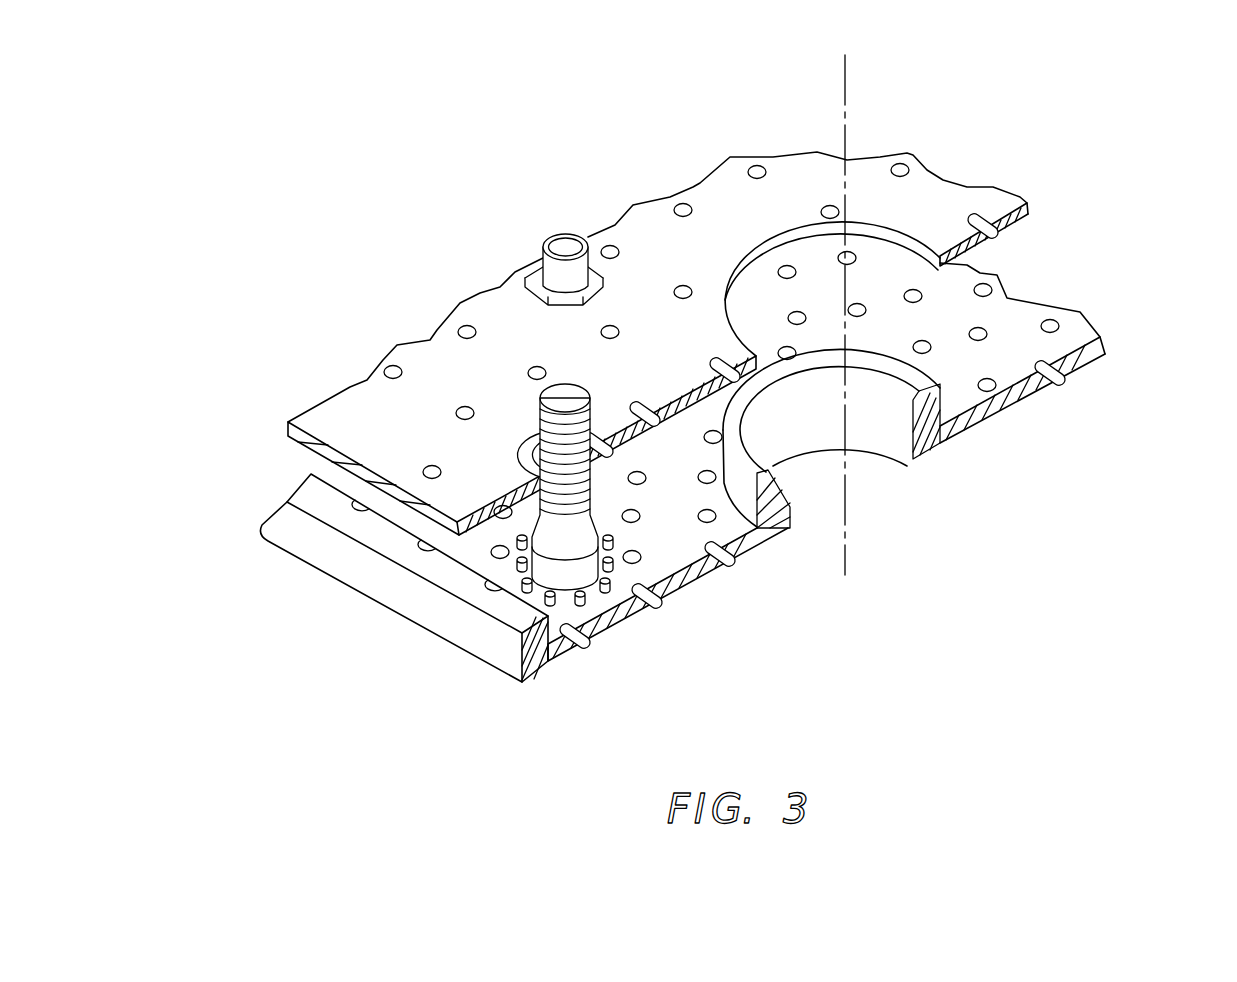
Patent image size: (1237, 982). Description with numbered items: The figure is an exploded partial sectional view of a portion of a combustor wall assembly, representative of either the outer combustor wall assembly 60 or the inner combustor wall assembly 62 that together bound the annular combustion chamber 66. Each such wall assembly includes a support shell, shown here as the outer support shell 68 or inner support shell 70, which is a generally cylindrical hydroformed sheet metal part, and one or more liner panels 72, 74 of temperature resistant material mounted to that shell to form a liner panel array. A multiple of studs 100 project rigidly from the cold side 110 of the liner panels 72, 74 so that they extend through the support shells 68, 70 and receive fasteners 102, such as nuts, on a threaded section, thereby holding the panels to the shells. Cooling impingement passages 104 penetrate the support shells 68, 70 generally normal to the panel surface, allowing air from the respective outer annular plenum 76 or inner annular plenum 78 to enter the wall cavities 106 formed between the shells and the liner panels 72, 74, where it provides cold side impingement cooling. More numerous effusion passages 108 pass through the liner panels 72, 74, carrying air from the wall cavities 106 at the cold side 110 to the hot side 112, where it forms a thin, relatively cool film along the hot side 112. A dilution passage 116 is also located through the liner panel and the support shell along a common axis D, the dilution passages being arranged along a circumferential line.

The outer combustor wall assembly 60 is at (702, 394).
The inner combustor wall assembly 62 is at (702, 394).
The annular combustion chamber 66 is at (1030, 422).
The outer support shell 68 is at (675, 290).
The inner support shell 70 is at (675, 290).
The liner panel 72 is at (821, 488).
The liner panel 74 is at (821, 488).
The outer annular plenum 76 is at (675, 290).
The inner annular plenum 78 is at (999, 155).
The stud 100 is at (557, 405).
The fastener 102 is at (573, 233).
The cooling impingement passage 104 is at (684, 202).
The wall cavity 106 is at (280, 460).
The effusion passage 108 is at (1052, 322).
The cold side 110 is at (650, 570).
The hot side 112 is at (625, 630).
The dilution passage 116 is at (868, 470).
The common axis D is at (845, 90).